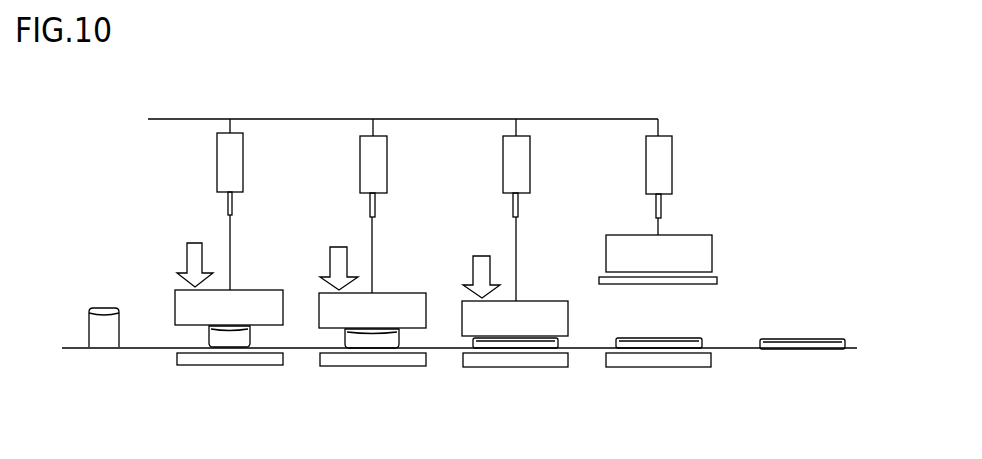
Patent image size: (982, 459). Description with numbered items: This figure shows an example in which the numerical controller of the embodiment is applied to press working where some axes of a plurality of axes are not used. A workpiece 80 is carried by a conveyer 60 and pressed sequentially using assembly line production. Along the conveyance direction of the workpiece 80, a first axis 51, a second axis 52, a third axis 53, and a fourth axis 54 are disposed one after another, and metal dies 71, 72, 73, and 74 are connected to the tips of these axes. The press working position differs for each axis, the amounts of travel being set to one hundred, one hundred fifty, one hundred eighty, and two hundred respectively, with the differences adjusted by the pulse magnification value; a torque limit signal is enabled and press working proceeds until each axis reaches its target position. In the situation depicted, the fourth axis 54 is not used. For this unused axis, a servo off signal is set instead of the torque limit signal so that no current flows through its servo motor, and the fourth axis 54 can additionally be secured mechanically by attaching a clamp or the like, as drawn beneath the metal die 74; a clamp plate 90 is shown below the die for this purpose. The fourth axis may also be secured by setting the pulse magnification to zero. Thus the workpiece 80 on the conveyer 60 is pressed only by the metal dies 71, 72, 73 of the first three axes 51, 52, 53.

The first axis 51 is at (237, 133).
The second axis 52 is at (380, 135).
The third axis 53 is at (525, 135).
The fourth axis 54 is at (666, 135).
The metal die 71 is at (258, 289).
The metal die 72 is at (393, 292).
The metal die 73 is at (533, 300).
The metal die 74 is at (712, 235).
The clamp plate 90 is at (693, 285).
The conveyer 60 is at (777, 350).
The workpiece 80 is at (92, 310).